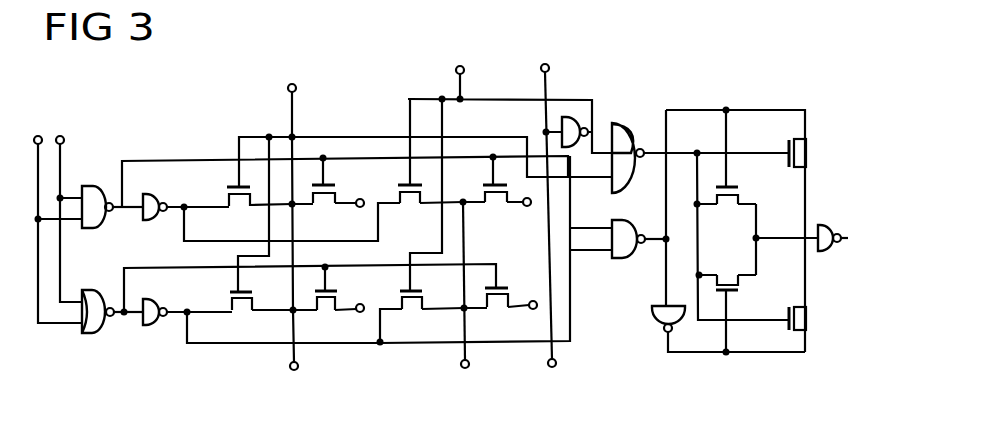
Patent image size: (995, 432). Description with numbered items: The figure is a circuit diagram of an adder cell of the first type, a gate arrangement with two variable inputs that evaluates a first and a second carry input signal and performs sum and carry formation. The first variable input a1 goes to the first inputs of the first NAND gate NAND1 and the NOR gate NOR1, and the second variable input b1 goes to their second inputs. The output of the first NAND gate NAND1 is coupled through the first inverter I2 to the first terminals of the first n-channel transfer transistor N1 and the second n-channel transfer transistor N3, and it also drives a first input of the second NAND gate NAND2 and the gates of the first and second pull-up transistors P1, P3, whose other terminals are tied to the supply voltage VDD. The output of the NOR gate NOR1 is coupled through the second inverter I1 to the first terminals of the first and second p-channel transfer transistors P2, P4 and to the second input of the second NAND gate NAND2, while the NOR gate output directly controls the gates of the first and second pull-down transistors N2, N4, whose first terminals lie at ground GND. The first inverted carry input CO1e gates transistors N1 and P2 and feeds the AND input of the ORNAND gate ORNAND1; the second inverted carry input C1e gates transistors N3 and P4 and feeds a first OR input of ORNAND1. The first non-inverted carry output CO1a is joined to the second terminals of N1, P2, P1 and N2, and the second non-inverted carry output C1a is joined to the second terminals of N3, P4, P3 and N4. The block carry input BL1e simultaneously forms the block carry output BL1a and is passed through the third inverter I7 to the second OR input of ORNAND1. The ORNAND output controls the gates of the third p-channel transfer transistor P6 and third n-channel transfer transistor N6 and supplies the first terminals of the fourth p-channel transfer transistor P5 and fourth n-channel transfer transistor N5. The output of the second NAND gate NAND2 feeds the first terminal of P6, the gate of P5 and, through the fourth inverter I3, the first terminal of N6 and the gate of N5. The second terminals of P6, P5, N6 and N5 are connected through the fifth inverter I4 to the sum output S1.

The first variable input a1 is at (38, 135).
The second variable input b1 is at (62, 135).
The first NAND gate NAND1 is at (83, 229).
The NOR gate NOR1 is at (105, 330).
The second inverter I1 is at (177, 334).
The first inverter I2 is at (186, 191).
The fourth inverter I3 is at (663, 332).
The fifth inverter I4 is at (802, 218).
The third inverter I7 is at (573, 110).
The first n-channel transfer transistor N1 is at (270, 214).
The first pull-up transistor P1 is at (334, 198).
The first pull-down transistor N2 is at (335, 307).
The first p-channel transfer transistor P2 is at (273, 320).
The second n-channel transfer transistor N3 is at (441, 169).
The second pull-up transistor P3 is at (503, 197).
The second pull-down transistor N4 is at (507, 317).
The second p-channel transfer transistor P4 is at (443, 224).
The fourth p-channel transfer transistor P5 is at (725, 177).
The fourth n-channel transfer transistor N5 is at (728, 278).
The third p-channel transfer transistor P6 is at (812, 155).
The third n-channel transfer transistor N6 is at (812, 319).
The ORNAND gate ORNAND1 is at (635, 128).
The second NAND gate NAND2 is at (652, 278).
The sum output S1 is at (845, 242).
The first inverted carry input CO1e is at (308, 33).
The first non-inverted carry output CO1a is at (294, 392).
The second inverted carry input C1e is at (483, 22).
The second non-inverted carry output C1a is at (467, 311).
The block carry input BL1e is at (542, 189).
The block carry output BL1a is at (557, 390).
The supply voltage VDD is at (525, 233).
The ground GND is at (578, 316).